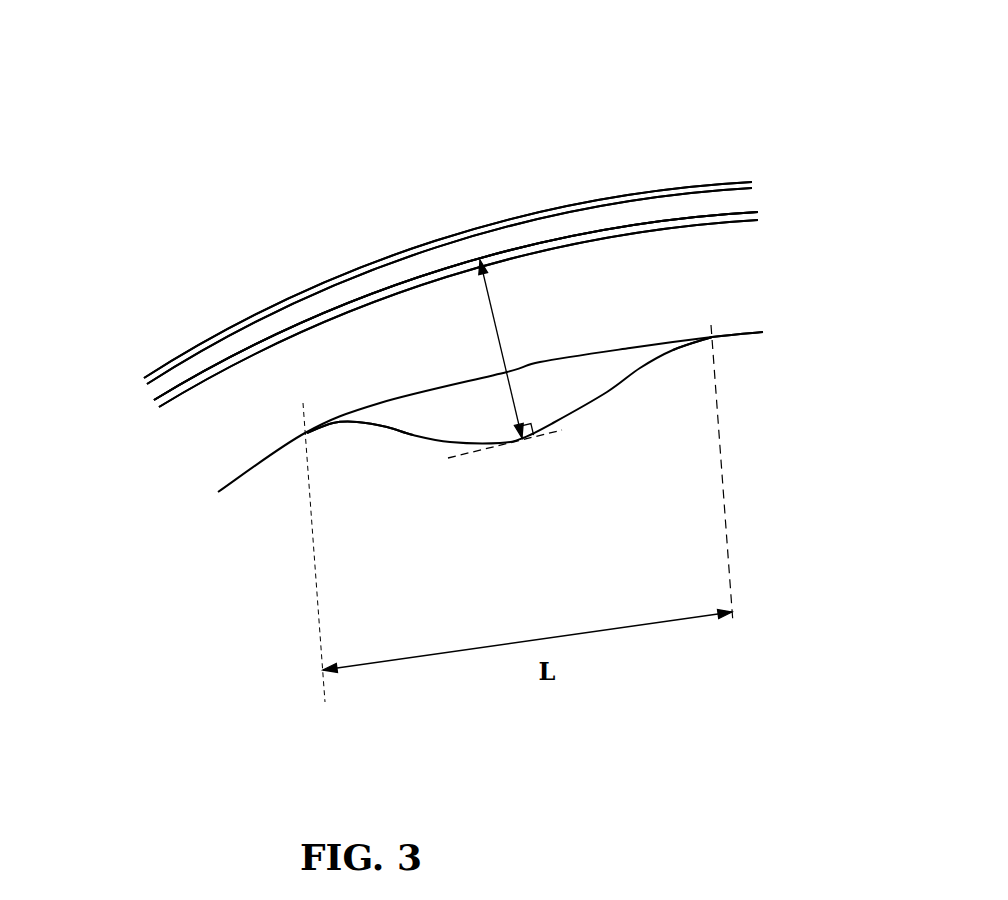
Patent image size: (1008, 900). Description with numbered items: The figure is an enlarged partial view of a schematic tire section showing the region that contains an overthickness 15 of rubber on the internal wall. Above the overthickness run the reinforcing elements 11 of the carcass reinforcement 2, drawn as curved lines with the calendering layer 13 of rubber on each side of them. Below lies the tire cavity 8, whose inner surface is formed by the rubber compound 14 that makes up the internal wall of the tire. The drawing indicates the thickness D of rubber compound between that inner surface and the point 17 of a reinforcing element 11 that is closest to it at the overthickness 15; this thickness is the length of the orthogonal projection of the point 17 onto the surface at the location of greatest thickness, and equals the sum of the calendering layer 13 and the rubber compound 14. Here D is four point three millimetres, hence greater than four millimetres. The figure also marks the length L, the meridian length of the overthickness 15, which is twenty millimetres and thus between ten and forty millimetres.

The carcass reinforcement 2 is at (140, 397).
The tire cavity 8 is at (490, 452).
The reinforcing element 11 is at (657, 207).
The calendering layer 13 is at (730, 185).
The rubber compound forming the internal wall 14 is at (728, 315).
The overthickness 15 is at (413, 413).
The closest point of a reinforcing element 17 is at (478, 260).